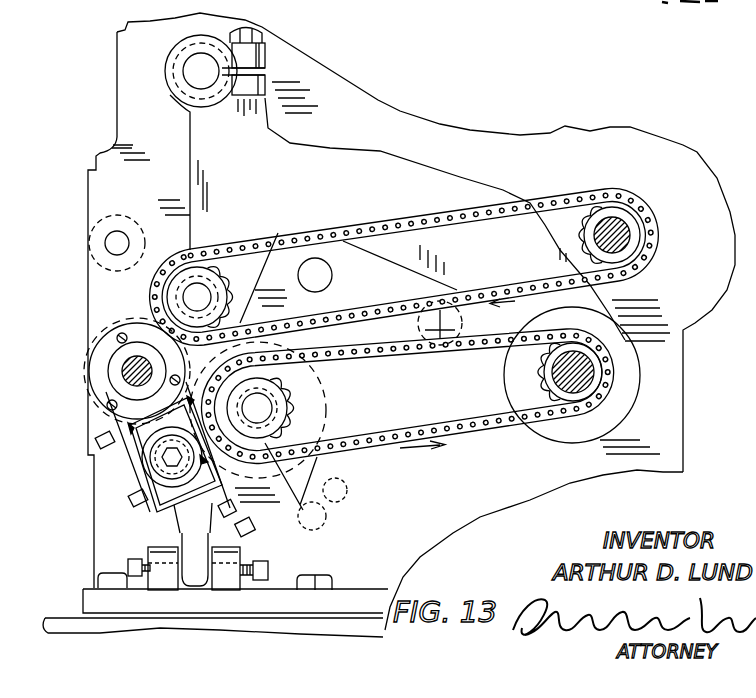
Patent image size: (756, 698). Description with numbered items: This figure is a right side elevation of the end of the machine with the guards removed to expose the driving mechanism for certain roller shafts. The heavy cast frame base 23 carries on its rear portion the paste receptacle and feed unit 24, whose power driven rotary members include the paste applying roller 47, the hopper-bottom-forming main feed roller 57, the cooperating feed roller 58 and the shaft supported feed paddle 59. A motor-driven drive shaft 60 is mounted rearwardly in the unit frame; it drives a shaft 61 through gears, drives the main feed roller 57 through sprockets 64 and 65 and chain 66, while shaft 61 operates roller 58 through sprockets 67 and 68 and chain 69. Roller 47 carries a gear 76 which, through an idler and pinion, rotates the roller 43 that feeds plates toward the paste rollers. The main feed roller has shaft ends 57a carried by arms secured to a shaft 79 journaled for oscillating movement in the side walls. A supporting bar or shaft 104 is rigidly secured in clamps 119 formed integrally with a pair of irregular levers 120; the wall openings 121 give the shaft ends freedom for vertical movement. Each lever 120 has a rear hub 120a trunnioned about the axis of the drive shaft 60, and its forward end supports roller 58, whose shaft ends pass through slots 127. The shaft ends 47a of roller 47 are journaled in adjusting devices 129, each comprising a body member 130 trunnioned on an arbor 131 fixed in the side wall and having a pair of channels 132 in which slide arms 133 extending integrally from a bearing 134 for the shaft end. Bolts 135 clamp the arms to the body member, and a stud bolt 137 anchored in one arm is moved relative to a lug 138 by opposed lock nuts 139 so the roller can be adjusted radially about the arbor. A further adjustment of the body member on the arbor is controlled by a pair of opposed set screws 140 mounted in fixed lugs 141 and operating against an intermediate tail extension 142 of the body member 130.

The cast frame base 23 is at (412, 650).
The paste receptacle and feed unit 24 is at (494, 518).
The roller 43 is at (100, 256).
The paste applying roller 47 is at (88, 398).
The shaft end 47a is at (122, 371).
The main feed roller 57 is at (335, 490).
The shaft end 57a is at (260, 407).
The feed roller 58 is at (262, 306).
The feed paddle 59 is at (316, 276).
The drive shaft 60 is at (573, 395).
The shaft 61 is at (620, 237).
The sprocket 64 is at (540, 390).
The sprocket 65 is at (298, 416).
The chain 66 is at (432, 430).
The sprocket 67 is at (575, 240).
The sprocket 68 is at (228, 267).
The chain 69 is at (395, 228).
The gear 76 is at (295, 486).
The shaft 79 is at (425, 331).
The supporting bar or shaft 104 is at (190, 71).
The clamp 119 is at (262, 74).
The irregular lever 120 is at (333, 157).
The hub 120a is at (625, 380).
The opening 121 is at (250, 32).
The slot 127 is at (212, 250).
The adjusting device 129 is at (135, 487).
The body member 130 is at (170, 493).
The arbor 131 is at (142, 470).
The channel 132 is at (158, 457).
The arm 133 is at (134, 490).
The bearing 134 is at (100, 358).
The bolt 135 is at (100, 443).
The stud bolt 137 is at (224, 510).
The lug 138 is at (250, 528).
The lock nut 139 is at (238, 540).
The set screw 140 is at (127, 561).
The fixed lug 141 is at (160, 575).
The tail extension 142 is at (192, 575).